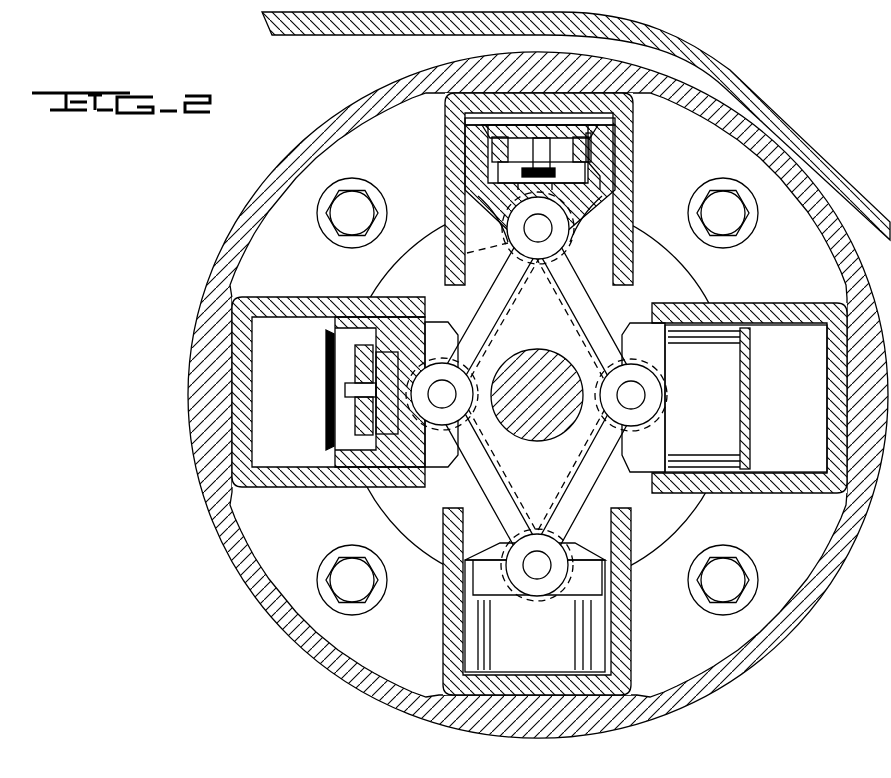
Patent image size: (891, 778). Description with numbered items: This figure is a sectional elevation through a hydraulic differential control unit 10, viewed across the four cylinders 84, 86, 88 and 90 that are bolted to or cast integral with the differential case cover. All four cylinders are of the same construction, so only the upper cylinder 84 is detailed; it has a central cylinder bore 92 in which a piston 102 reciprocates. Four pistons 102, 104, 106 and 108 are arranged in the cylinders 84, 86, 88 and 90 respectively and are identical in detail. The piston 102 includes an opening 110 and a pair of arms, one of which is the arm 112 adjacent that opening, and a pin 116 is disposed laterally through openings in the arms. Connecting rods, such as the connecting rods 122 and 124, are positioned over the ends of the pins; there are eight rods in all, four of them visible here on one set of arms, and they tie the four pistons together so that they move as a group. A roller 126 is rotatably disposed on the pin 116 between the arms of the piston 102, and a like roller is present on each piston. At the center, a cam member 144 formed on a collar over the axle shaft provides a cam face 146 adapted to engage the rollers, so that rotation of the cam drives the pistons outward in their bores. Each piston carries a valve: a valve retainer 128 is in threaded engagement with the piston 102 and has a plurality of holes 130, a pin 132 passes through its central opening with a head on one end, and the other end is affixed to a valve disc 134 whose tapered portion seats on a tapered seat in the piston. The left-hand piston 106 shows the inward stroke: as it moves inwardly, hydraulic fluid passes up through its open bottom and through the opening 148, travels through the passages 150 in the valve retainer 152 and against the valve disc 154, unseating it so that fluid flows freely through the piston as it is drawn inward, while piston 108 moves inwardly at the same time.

The outer casing 10 is at (712, 54).
The cylinder 84 is at (637, 197).
The cylinder 86 is at (628, 636).
The cylinder 88 is at (285, 297).
The cylinder 90 is at (784, 303).
The central cylinder bore 92 is at (610, 258).
The piston 102 is at (476, 191).
The piston 104 is at (548, 639).
The piston 106 is at (358, 457).
The piston 108 is at (715, 412).
The opening 110 is at (598, 180).
The arm 112 is at (600, 221).
The pin 116 is at (536, 226).
The connecting rod 122 is at (590, 306).
The connecting rod 124 is at (489, 298).
The roller 126 is at (452, 264).
The valve retainer 128 is at (596, 141).
The holes 130 is at (494, 150).
The pin 132 is at (500, 172).
The valve disc 134 is at (488, 130).
The cam member 144 is at (552, 334).
The cam face 146 is at (596, 440).
The opening 148 is at (402, 418).
The passages 150 is at (360, 359).
The valve retainer 152 is at (383, 442).
The valve disc 154 is at (330, 437).